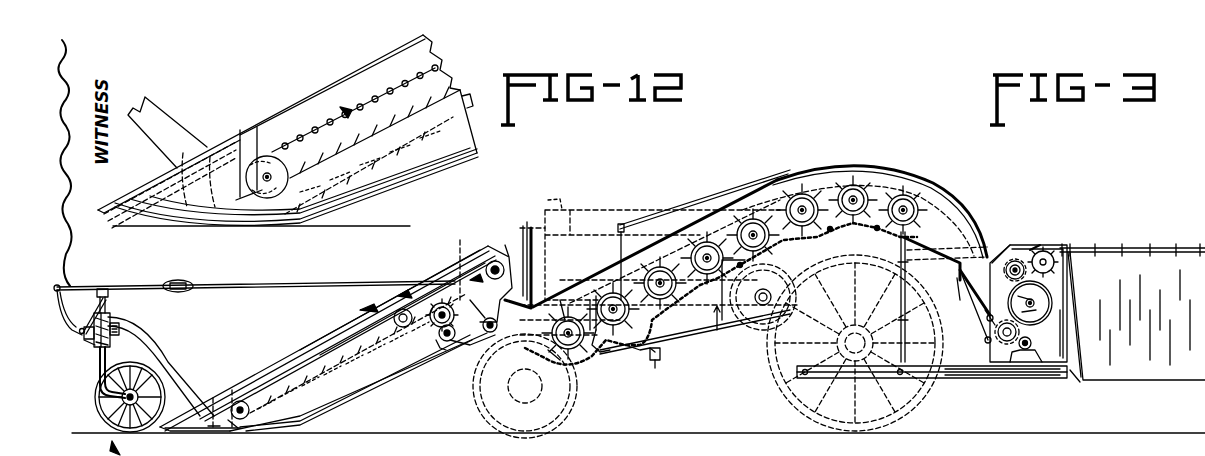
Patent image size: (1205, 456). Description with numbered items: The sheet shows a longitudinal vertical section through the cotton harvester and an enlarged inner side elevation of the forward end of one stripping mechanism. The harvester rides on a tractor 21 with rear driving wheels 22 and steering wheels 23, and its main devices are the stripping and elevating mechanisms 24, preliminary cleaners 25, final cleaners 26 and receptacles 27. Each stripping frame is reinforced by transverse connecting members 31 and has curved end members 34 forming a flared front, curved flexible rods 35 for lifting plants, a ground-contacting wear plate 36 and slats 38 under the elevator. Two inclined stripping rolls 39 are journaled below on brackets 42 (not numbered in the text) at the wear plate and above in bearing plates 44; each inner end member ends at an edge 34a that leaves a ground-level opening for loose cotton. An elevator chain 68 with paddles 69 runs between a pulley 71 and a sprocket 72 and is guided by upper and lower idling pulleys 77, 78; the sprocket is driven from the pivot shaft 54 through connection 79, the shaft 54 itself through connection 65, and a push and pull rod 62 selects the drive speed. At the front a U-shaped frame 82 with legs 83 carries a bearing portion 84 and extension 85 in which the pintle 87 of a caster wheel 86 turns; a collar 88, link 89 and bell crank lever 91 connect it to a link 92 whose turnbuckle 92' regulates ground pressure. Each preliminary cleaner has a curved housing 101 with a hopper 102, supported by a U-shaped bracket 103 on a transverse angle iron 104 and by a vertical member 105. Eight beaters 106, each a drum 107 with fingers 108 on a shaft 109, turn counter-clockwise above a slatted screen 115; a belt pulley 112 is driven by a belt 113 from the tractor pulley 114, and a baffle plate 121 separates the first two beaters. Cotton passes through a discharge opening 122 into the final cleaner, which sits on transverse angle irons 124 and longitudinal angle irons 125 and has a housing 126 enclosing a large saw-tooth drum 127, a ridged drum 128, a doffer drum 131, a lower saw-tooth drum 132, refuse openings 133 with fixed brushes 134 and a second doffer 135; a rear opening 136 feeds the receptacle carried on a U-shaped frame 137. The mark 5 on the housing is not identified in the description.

In FIG. 3, the arcuate guide shield 5 is at (775, 180).
In FIG. 3, the tractor 21 is at (612, 208).
In FIG. 3, the rear driving wheels 22 is at (780, 405).
In FIG. 3, the steering wheels 23 is at (548, 430).
In FIG. 3, the stripping and elevating mechanisms 24 is at (260, 372).
In FIG. 3, the preliminary cleaners 25 is at (682, 195).
In FIG. 3, the final cleaners 26 is at (1030, 244).
In FIG. 3, the receptacles or containers 27 is at (1160, 270).
In FIG. 3, the transverse connecting members 31 is at (490, 223).
In FIG. 12, the curved end members 34 is at (165, 205).
In FIG. 3, the curved end members 34 is at (213, 396).
In FIG. 12, the edge 34a is at (242, 132).
In FIG. 3, the edge 34a is at (232, 392).
In FIG. 12, the curved flexible rods 35 is at (228, 222).
In FIG. 3, the wear plate 36 is at (190, 430).
In FIG. 3, the gratings or slats 38 is at (395, 378).
In FIG. 12, the stripping rolls 39 is at (405, 150).
In FIG. 3, the stripping rolls 39 is at (303, 383).
In FIG. 3, the foot bracket 42 is at (230, 430).
In FIG. 3, the bearing plates 44 is at (398, 288).
In FIG. 3, the transverse shaft 54 is at (442, 300).
In FIG. 3, the push and pull rod 62 is at (655, 226).
In FIG. 3, the chain and sprocket connection 65 is at (455, 342).
In FIG. 12, the chains 68 is at (370, 125).
In FIG. 3, the chains 68 is at (350, 326).
In FIG. 12, the paddles 69 is at (345, 112).
In FIG. 3, the paddles 69 is at (345, 400).
In FIG. 12, the pulley 71 is at (278, 156).
In FIG. 3, the pulley 71 is at (240, 400).
In FIG. 3, the sprocket 72 is at (500, 262).
In FIG. 3, the upper idling pulley 77 is at (360, 330).
In FIG. 3, the lower idling pulley 78 is at (444, 352).
In FIG. 3, the chain and sprocket connection 79 is at (463, 264).
In FIG. 3, the U-shaped frame member 82 is at (158, 338).
In FIG. 12, the legs 83 is at (158, 120).
In FIG. 3, the legs 83 is at (170, 370).
In FIG. 3, the bearing portion 84 is at (96, 350).
In FIG. 3, the extension 85 is at (90, 340).
In FIG. 3, the wheel 86 is at (97, 404).
In FIG. 3, the pintle 87 is at (106, 365).
In FIG. 3, the collar 88 is at (108, 296).
In FIG. 3, the link 89 is at (112, 318).
In FIG. 3, the bell crank lever 91 is at (66, 298).
In FIG. 3, the link 92 is at (254, 275).
In FIG. 3, the turnbuckles 92' is at (165, 275).
In FIG. 3, the housing 101 is at (1183, 449).
In FIG. 3, the hopper 102 is at (528, 230).
In FIG. 3, the U-shaped bracket 103 is at (640, 352).
In FIG. 3, the transverse angle iron member 104 is at (657, 362).
In FIG. 3, the vertical supporting member 105 is at (900, 247).
In FIG. 3, the beaters 106 is at (935, 160).
In FIG. 3, the sheet metal drum 107 is at (520, 345).
In FIG. 3, the fingers 108 is at (708, 240).
In FIG. 3, the shaft 109 is at (568, 316).
In FIG. 3, the belt pulley 112 is at (602, 352).
In FIG. 3, the belt 113 is at (692, 333).
In FIG. 3, the belt pulley 114 is at (740, 325).
In FIG. 3, the screen 115 is at (885, 381).
In FIG. 3, the baffle plate 121 is at (585, 306).
In FIG. 3, the discharge opening 122 is at (990, 258).
In FIG. 3, the transverse angle irons 124 is at (985, 378).
In FIG. 3, the longitudinal angle irons 125 is at (942, 378).
In FIG. 3, the sheet metal housing 126 is at (958, 272).
In FIG. 3, the large drum 127 is at (1040, 302).
In FIG. 3, the smaller drum 128 is at (1016, 260).
In FIG. 3, the doffer drum 131 is at (1048, 252).
In FIG. 3, the saw-tooth surfaced drum 132 is at (1005, 344).
In FIG. 3, the refuse openings 133 is at (986, 338).
In FIG. 3, the fixed brushes 134 is at (980, 322).
In FIG. 3, the second doffer 135 is at (1028, 350).
In FIG. 3, the discharge opening 136 is at (1062, 278).
In FIG. 3, the U-shaped frame 137 is at (1126, 247).